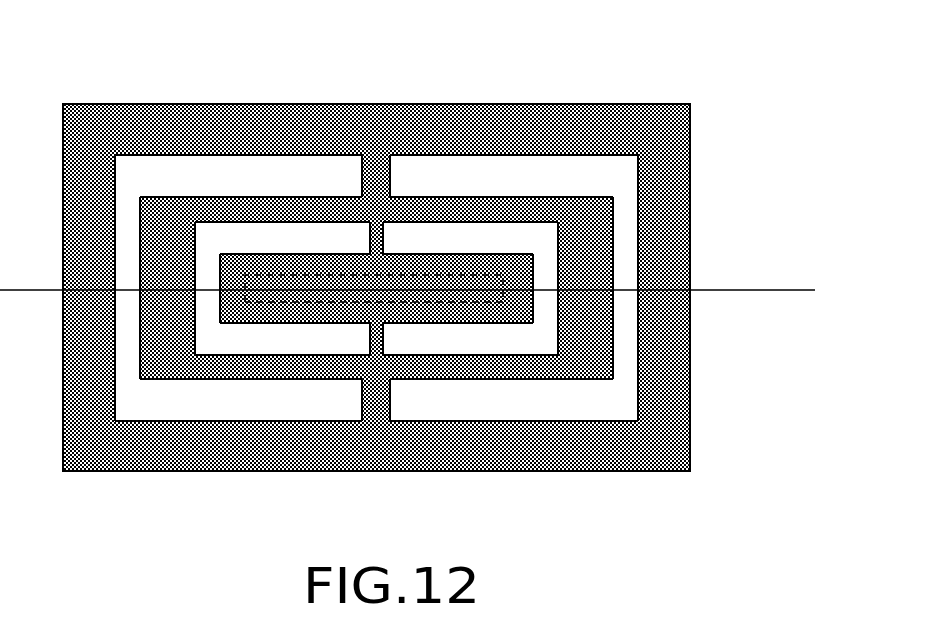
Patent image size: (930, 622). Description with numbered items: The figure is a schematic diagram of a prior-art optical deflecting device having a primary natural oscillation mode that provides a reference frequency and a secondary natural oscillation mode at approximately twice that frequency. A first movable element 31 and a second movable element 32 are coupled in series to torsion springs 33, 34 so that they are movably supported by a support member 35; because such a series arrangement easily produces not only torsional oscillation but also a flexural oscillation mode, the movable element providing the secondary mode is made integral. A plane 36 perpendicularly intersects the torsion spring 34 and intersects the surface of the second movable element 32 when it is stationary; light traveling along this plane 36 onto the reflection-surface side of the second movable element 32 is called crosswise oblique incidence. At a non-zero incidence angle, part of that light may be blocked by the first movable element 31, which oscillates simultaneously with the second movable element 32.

The first movable element 31 is at (598, 232).
The second movable element 32 is at (465, 303).
The torsion spring 33 is at (375, 192).
The torsion spring 34 is at (373, 242).
The support member 35 is at (415, 123).
The plane 36 is at (745, 292).